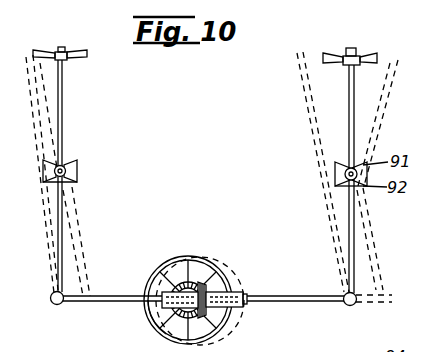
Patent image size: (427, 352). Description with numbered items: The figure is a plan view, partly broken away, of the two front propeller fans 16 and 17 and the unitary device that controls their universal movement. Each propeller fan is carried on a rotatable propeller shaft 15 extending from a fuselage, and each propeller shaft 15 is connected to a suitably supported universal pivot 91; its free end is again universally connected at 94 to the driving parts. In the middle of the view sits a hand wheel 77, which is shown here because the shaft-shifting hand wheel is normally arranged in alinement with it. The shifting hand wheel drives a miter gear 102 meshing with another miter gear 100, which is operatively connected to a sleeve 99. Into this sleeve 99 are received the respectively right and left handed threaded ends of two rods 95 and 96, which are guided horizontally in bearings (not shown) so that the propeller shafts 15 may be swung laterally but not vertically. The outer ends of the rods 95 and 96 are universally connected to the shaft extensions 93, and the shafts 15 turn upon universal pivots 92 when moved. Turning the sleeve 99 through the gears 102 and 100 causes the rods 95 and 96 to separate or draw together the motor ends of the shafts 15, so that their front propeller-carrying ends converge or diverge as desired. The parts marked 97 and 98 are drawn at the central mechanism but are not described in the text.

The propeller shaft 15 is at (62, 109).
The propeller fan 16 is at (372, 57).
The propeller fan 17 is at (84, 56).
The hand wheel 77 is at (203, 260).
The universal pivot 91 is at (64, 163).
The universal pivot 92 is at (72, 180).
The shaft extension 93 is at (351, 230).
The universal connection 94 is at (55, 304).
The rod 95 is at (110, 296).
The rod 96 is at (313, 302).
The shaft end collar 97 is at (246, 304).
The wheel rim 98 is at (150, 308).
The sleeve 99 is at (241, 297).
The miter gear 100 is at (207, 288).
The miter gear 102 is at (180, 281).